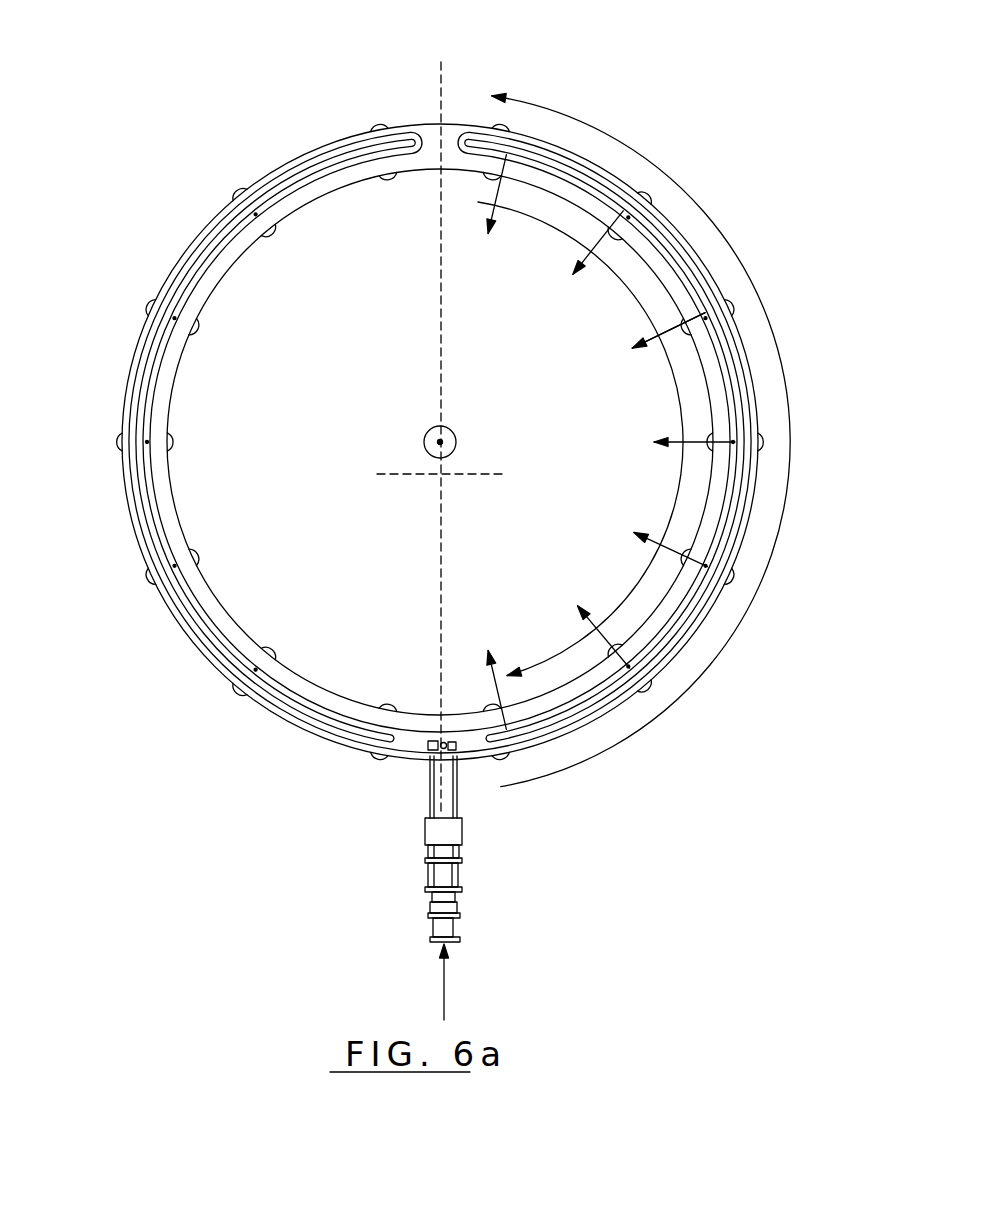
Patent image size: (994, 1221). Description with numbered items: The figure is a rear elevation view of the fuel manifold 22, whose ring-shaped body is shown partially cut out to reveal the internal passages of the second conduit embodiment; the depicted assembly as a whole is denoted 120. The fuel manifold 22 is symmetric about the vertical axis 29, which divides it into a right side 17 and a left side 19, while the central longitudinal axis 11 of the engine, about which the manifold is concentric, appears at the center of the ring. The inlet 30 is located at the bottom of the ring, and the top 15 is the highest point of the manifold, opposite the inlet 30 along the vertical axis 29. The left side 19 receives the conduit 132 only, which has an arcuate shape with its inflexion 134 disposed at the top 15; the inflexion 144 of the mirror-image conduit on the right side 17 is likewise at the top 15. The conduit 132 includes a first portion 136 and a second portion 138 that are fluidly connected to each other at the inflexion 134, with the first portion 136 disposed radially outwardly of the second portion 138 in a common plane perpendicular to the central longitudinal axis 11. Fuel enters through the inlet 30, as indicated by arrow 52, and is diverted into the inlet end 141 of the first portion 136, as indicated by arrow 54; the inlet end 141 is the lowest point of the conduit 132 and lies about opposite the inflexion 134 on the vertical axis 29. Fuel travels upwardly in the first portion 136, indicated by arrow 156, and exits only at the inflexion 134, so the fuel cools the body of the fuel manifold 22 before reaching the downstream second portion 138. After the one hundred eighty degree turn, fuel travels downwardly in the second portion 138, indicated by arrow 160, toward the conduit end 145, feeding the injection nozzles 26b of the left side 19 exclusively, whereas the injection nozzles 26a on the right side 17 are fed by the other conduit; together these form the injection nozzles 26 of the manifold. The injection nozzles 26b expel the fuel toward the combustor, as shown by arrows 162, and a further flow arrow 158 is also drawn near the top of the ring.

The fluid distribution assembly 120 is at (643, 95).
The top 15 is at (445, 424).
The inflexion 144 is at (408, 165).
The inflexion 134 is at (471, 165).
The injection nozzles 26a is at (378, 128).
The injection nozzles 26b is at (512, 128).
The flow direction arrow 158 is at (443, 90).
The arrow 156 is at (770, 336).
The conduit 132 is at (742, 382).
The left side 19 is at (757, 400).
The arrows 162 is at (655, 350).
The central longitudinal axis 11 is at (442, 442).
The vertical axis 29 is at (440, 470).
The arrow 160 is at (665, 482).
The second portion 138 is at (660, 622).
The conduit end 145 is at (508, 723).
The fuel manifold 22 is at (178, 612).
The right side 17 is at (202, 651).
The injection nozzles 26 is at (232, 688).
The first portion 136 is at (688, 636).
The inlet end 141 is at (452, 745).
The arrow 54 is at (465, 748).
The inlet 30 is at (455, 876).
The arrow 52 is at (447, 997).